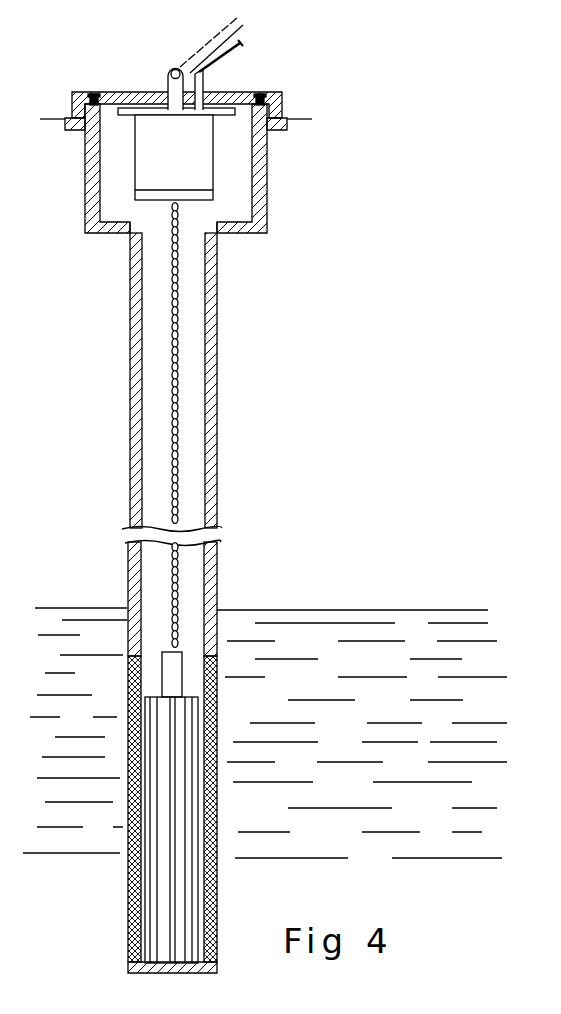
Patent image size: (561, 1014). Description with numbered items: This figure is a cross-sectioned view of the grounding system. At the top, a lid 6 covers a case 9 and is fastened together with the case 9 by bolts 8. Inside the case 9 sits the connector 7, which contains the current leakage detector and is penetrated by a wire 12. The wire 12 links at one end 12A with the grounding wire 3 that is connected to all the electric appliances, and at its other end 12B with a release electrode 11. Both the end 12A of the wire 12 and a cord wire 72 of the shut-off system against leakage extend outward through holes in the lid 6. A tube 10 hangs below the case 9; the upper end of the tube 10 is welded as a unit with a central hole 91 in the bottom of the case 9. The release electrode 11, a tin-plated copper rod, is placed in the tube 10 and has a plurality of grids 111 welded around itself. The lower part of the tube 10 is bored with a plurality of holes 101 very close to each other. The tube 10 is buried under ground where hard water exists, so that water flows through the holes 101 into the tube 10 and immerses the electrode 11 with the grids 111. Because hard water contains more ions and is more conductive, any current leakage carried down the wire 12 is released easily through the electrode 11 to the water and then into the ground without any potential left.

The grounding wire 3 is at (197, 57).
The end of the wire 12A is at (170, 88).
The cord wire 72 is at (203, 82).
The bolts 8 is at (93, 95).
The lid 6 is at (282, 101).
The case 9 is at (266, 178).
The connector 7 is at (147, 162).
The central hole 91 is at (217, 236).
The tube 10 is at (212, 368).
The wire 12 is at (176, 446).
The end of the wire 12B is at (178, 662).
The release electrode 11 is at (157, 697).
The grids 111 is at (185, 817).
The holes 101 is at (128, 881).